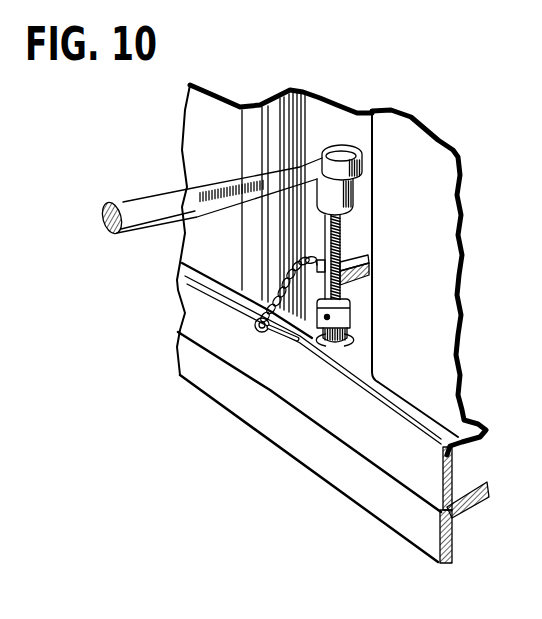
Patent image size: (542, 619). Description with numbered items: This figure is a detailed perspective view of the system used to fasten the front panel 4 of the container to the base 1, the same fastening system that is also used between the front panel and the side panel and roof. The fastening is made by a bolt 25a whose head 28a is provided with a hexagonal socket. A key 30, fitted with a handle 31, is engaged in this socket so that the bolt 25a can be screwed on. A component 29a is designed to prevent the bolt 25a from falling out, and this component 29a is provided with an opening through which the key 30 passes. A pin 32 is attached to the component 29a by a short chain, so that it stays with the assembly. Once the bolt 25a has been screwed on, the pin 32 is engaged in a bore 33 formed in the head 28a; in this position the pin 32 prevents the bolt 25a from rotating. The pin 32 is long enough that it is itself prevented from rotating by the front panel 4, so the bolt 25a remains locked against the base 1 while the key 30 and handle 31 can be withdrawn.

The base 1 is at (399, 512).
The front panel 4 is at (429, 282).
The bolt 25a is at (329, 343).
The head of the bolt 28a is at (346, 316).
The component 29a is at (358, 272).
The key 30 is at (340, 229).
The handle 31 is at (157, 202).
The pin 32 is at (278, 333).
The bore 33 is at (325, 321).